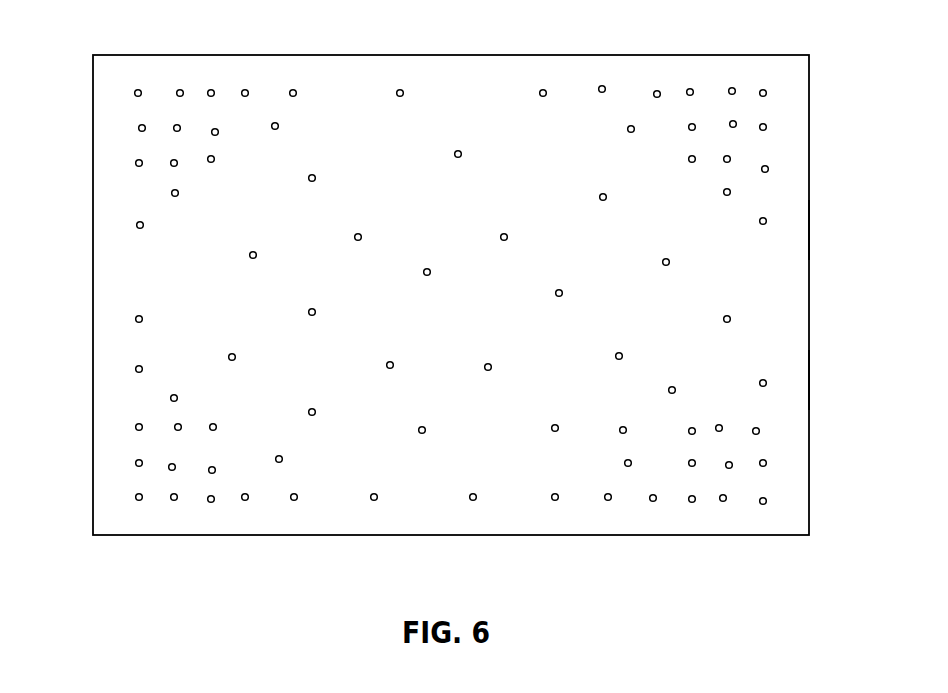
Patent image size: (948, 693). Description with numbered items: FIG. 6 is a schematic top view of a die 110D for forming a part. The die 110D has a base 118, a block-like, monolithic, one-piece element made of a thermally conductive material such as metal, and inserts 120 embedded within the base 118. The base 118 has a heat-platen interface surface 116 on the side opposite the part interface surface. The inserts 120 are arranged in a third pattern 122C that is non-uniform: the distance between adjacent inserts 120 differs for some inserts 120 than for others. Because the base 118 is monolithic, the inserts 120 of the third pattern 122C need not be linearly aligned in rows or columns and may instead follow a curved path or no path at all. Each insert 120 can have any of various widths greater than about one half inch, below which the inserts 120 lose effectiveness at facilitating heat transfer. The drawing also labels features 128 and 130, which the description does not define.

The die 110D is at (812, 83).
The heat-platen interface surface 116 is at (789, 231).
The base 118 is at (809, 381).
The inserts 120 is at (139, 89).
The third pattern 122C is at (123, 130).
The cluster of apertures 128 is at (233, 80).
The central region 130 is at (465, 106).